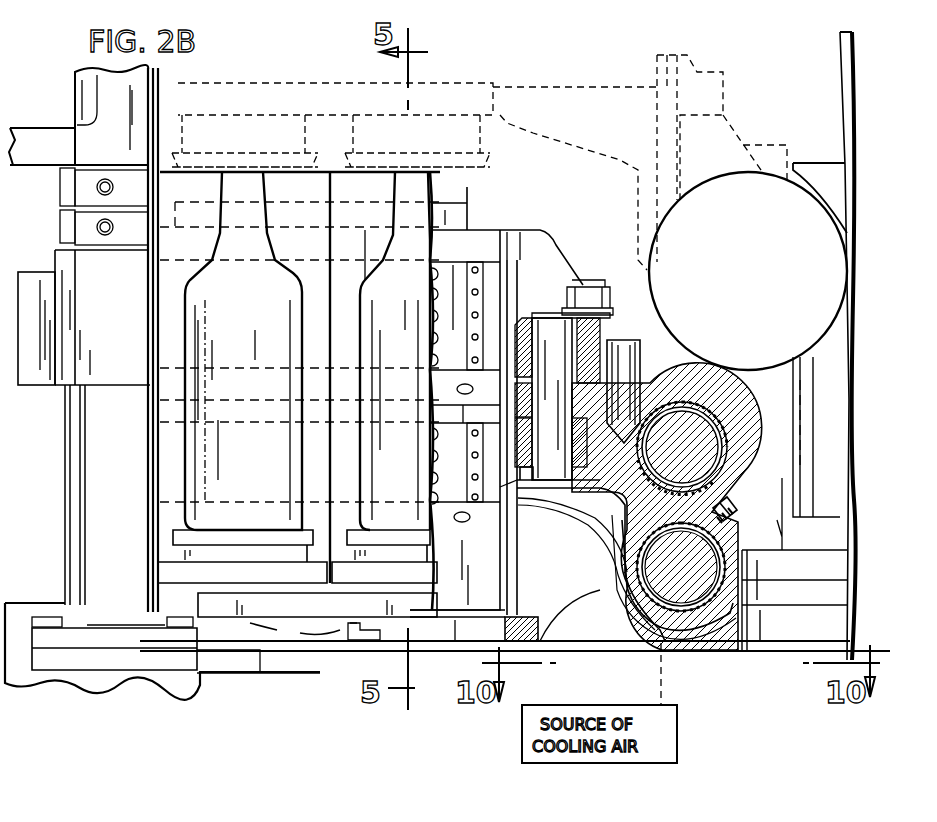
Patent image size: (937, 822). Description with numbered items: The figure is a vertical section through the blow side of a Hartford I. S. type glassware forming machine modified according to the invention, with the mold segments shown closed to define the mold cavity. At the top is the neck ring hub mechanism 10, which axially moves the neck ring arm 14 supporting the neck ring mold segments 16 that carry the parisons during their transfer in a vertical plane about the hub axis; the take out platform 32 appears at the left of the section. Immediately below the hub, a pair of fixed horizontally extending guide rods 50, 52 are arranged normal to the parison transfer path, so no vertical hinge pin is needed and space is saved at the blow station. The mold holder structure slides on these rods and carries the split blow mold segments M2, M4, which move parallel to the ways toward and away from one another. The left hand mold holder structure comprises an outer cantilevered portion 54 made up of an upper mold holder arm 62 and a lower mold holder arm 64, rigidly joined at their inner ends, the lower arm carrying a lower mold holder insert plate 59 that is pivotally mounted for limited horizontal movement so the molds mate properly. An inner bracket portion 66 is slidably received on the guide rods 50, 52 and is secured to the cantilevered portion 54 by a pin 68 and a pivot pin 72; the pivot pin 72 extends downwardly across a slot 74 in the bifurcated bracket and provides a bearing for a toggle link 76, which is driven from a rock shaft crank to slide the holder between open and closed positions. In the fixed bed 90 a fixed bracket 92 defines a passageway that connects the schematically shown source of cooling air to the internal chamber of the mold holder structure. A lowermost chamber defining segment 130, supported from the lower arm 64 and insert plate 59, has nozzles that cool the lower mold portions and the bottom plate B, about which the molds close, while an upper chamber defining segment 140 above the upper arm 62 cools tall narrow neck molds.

The neck ring hub mechanism 10 is at (752, 346).
The neck ring arm 14 is at (557, 88).
The neck ring mold segments 16 is at (355, 153).
The blow mold segment M4 is at (300, 160).
The blow mold segment M2 is at (357, 163).
The take out platform 32 is at (58, 412).
The guide rod 50 is at (727, 448).
The guide rod 52 is at (698, 633).
The outer cantilevered portion of mold holder structure 54 is at (538, 230).
The lower mold holder insert plate 59 is at (415, 427).
The upper mold holder arm 62 is at (213, 260).
The lower mold holder arm 64 is at (210, 368).
The inner bracket portion 66 is at (735, 508).
The pin 68 is at (607, 347).
The pivot pin 72 is at (542, 317).
The slot 74 is at (575, 447).
The toggle link 76 is at (520, 442).
The bed 90 is at (810, 648).
The fixed bracket 92 is at (627, 620).
The lowermost chamber defining segment 130 is at (487, 616).
The upper chamber defining segment 140 is at (467, 203).
The bottom plate B is at (255, 527).